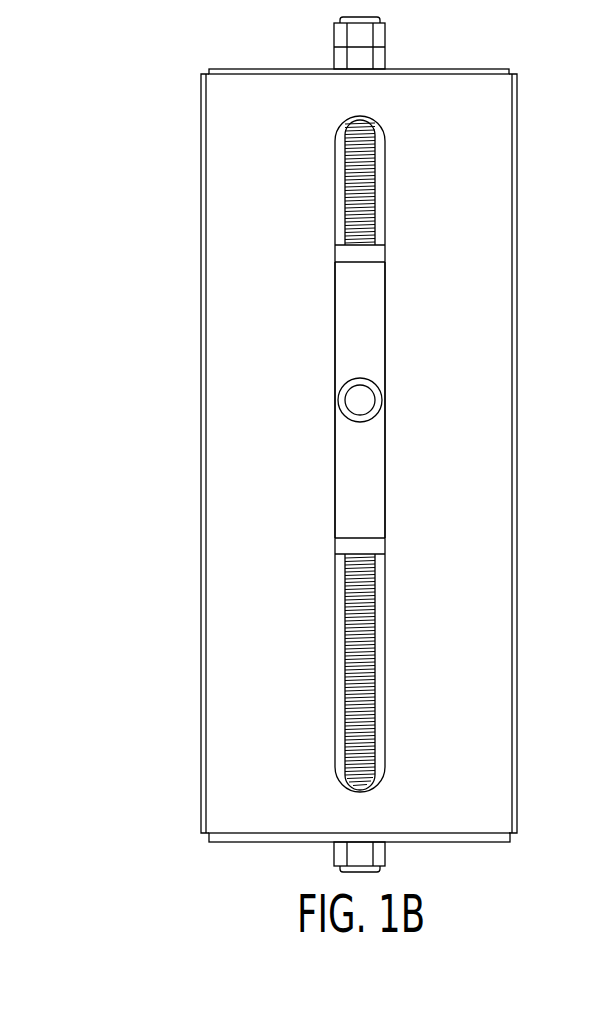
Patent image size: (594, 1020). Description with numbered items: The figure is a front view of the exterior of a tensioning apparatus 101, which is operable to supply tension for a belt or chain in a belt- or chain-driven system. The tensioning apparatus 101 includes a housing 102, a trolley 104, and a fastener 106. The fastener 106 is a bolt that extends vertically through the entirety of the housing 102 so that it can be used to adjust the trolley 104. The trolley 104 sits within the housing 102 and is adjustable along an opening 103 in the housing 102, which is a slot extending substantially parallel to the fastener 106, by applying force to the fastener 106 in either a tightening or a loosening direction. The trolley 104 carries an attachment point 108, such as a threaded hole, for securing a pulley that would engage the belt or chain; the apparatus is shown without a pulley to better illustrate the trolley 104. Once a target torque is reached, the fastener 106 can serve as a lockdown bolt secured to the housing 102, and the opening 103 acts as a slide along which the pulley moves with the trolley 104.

The tensioning apparatus 101 is at (118, 91).
The housing 102 is at (498, 111).
The opening 103 is at (394, 230).
The trolley 104 is at (360, 307).
The fastener 106 is at (362, 178).
The attachment point 108 is at (360, 400).